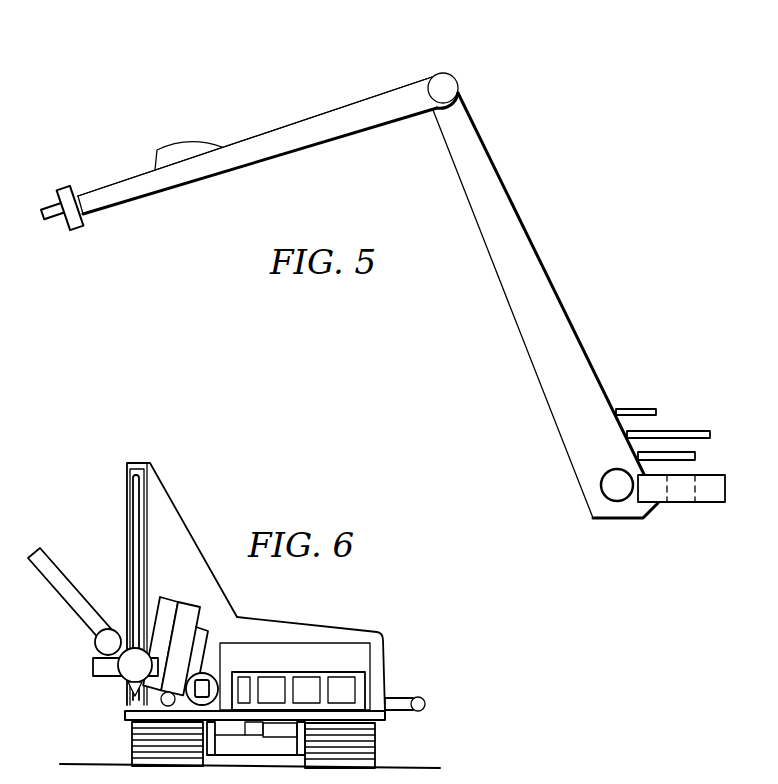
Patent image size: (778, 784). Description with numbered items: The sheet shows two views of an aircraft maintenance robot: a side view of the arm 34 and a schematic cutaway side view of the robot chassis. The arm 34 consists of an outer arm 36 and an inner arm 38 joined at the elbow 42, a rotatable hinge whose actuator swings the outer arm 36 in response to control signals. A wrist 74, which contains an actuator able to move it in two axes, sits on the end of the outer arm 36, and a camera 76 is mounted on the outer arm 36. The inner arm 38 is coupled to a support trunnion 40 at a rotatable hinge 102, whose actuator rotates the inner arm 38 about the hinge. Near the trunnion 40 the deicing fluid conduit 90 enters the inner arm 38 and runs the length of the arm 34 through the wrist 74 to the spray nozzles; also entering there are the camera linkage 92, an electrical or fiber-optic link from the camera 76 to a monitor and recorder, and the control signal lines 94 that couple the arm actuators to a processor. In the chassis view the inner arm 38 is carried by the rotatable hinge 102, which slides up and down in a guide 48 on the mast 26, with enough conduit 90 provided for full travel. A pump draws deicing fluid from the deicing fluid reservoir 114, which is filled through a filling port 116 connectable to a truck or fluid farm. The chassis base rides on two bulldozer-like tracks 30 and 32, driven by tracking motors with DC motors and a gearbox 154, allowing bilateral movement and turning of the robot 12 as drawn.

In FIG. 6, the mobile base unit 12 is at (213, 687).
In FIG. 6, the mast 26 is at (137, 567).
In FIG. 6, the track 30 is at (378, 743).
In FIG. 6, the track 32 is at (132, 747).
In FIG. 5, the arm 34 is at (285, 66).
In FIG. 5, the outer arm 36 is at (287, 157).
In FIG. 5, the inner arm 38 is at (546, 267).
In FIG. 6, the inner arm 38 is at (58, 603).
In FIG. 5, the support trunnion 40 is at (690, 504).
In FIG. 5, the elbow 42 is at (445, 72).
In FIG. 6, the guide 48 is at (133, 550).
In FIG. 5, the wrist 74 is at (60, 190).
In FIG. 5, the camera 76 is at (163, 145).
In FIG. 5, the deicing fluid conduit 90 is at (688, 430).
In FIG. 6, the deicing fluid conduit 90 is at (127, 697).
In FIG. 5, the camera linkage 92 is at (638, 410).
In FIG. 5, the control signal lines 94 is at (695, 457).
In FIG. 5, the rotatable hinge 102 is at (612, 469).
In FIG. 6, the rotatable hinge 102 is at (95, 650).
In FIG. 6, the deicing fluid reservoir 114 is at (325, 642).
In FIG. 6, the filling port 116 is at (395, 695).
In FIG. 6, the gearbox 154 is at (213, 745).